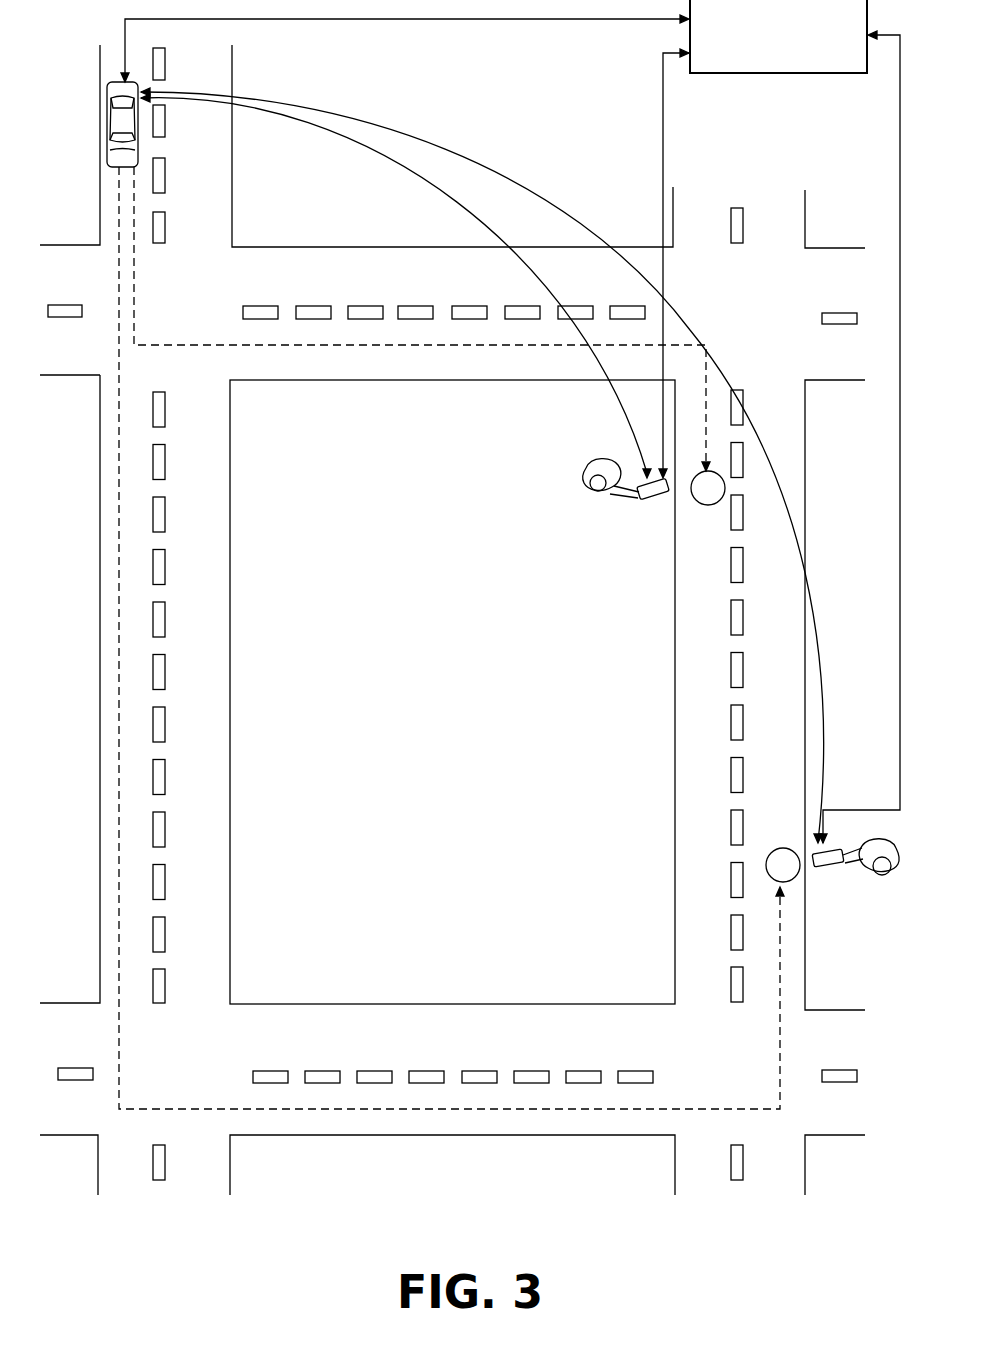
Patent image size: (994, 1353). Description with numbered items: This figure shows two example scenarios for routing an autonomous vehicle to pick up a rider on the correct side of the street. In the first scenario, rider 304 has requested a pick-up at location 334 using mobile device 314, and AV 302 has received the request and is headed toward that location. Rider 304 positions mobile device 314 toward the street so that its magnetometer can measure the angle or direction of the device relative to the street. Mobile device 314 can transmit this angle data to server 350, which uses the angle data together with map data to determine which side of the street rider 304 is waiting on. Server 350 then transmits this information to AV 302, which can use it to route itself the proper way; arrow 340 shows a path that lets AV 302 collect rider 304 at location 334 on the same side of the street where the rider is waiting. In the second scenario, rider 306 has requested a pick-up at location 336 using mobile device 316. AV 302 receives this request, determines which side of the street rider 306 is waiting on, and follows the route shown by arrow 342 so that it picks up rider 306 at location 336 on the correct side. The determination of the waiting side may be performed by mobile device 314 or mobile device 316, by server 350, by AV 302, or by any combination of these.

The AV 302 is at (96, 132).
The rider 304 is at (593, 504).
The rider 306 is at (891, 882).
The mobile device 314 is at (655, 502).
The mobile device 316 is at (835, 870).
The location 334 is at (713, 505).
The location 336 is at (781, 850).
The arrow 340 is at (135, 276).
The arrow 342 is at (118, 272).
The server 350 is at (786, 73).